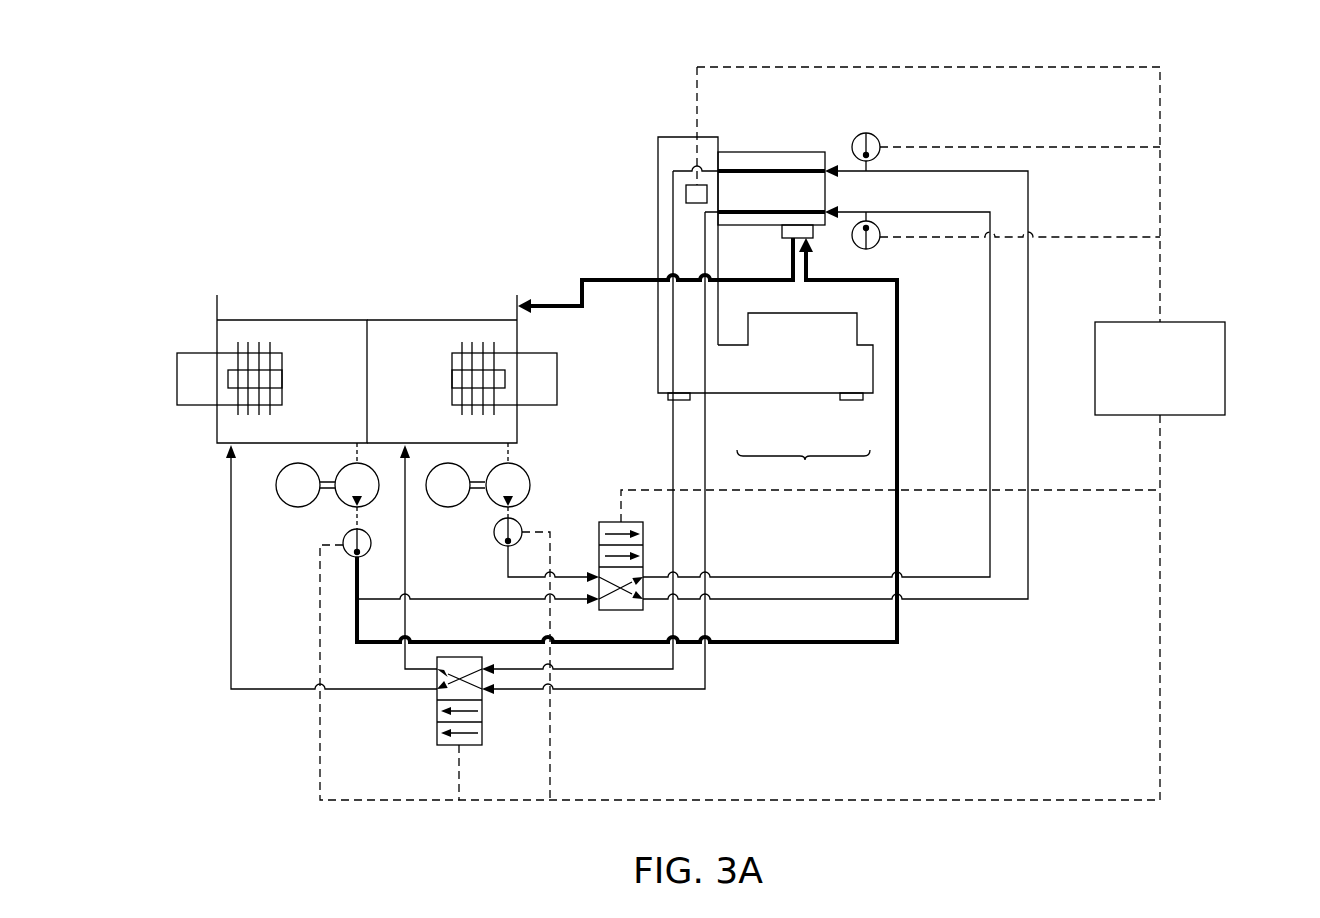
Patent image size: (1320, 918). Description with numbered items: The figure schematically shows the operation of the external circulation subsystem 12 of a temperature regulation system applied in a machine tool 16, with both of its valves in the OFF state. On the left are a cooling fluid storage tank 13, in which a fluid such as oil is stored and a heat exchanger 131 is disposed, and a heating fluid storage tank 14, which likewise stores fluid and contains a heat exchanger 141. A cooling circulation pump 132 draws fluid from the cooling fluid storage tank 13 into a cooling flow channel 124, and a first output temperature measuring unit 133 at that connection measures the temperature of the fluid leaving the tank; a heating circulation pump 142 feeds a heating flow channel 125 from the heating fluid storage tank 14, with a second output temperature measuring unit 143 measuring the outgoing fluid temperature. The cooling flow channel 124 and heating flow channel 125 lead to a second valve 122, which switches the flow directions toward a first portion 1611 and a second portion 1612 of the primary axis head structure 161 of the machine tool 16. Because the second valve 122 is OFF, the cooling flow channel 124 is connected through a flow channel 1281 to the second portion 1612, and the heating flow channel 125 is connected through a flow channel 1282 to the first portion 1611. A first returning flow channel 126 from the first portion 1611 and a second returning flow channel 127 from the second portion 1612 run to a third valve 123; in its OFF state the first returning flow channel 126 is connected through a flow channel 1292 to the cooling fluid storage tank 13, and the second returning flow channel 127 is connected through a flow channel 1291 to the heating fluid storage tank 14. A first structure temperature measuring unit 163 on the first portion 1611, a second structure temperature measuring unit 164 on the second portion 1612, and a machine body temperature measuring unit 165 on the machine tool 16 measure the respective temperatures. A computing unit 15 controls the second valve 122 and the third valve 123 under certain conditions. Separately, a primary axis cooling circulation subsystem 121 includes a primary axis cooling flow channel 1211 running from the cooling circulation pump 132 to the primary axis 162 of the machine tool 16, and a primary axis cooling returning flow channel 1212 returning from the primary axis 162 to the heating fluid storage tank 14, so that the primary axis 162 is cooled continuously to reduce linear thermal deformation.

The external circulation subsystem 12 is at (1200, 98).
The cooling fluid storage tank 13 is at (333, 320).
The heat exchanger 131 is at (255, 357).
The cooling circulation pump 132 is at (267, 490).
The first output temperature measuring unit 133 is at (345, 540).
The heating fluid storage tank 14 is at (392, 320).
The heat exchanger 141 is at (477, 357).
The heating circulation pump 142 is at (456, 507).
The second output temperature measuring unit 143 is at (520, 522).
The computing unit 15 is at (1191, 322).
The machine tool 16 is at (677, 136).
The primary axis head structure 161 is at (743, 152).
The first portion 1611 is at (758, 169).
The second portion 1612 is at (792, 210).
The primary axis 162 is at (815, 233).
The first structure temperature measuring unit 163 is at (877, 139).
The second structure temperature measuring unit 164 is at (874, 248).
The machine body temperature measuring unit 165 is at (685, 195).
The primary axis cooling circulation subsystem 121 is at (803, 468).
The primary axis cooling flow channel 1211 is at (898, 415).
The primary axis cooling returning flow channel 1212 is at (752, 282).
The second valve 122 is at (609, 522).
The third valve 123 is at (446, 746).
The cooling flow channel 124 is at (497, 602).
The heating flow channel 125 is at (506, 566).
The first returning flow channel 126 is at (633, 668).
The second returning flow channel 127 is at (636, 690).
The flow channel 1281 is at (762, 577).
The flow channel 1282 is at (762, 600).
The flow channel 1291 is at (403, 660).
The flow channel 1292 is at (367, 690).